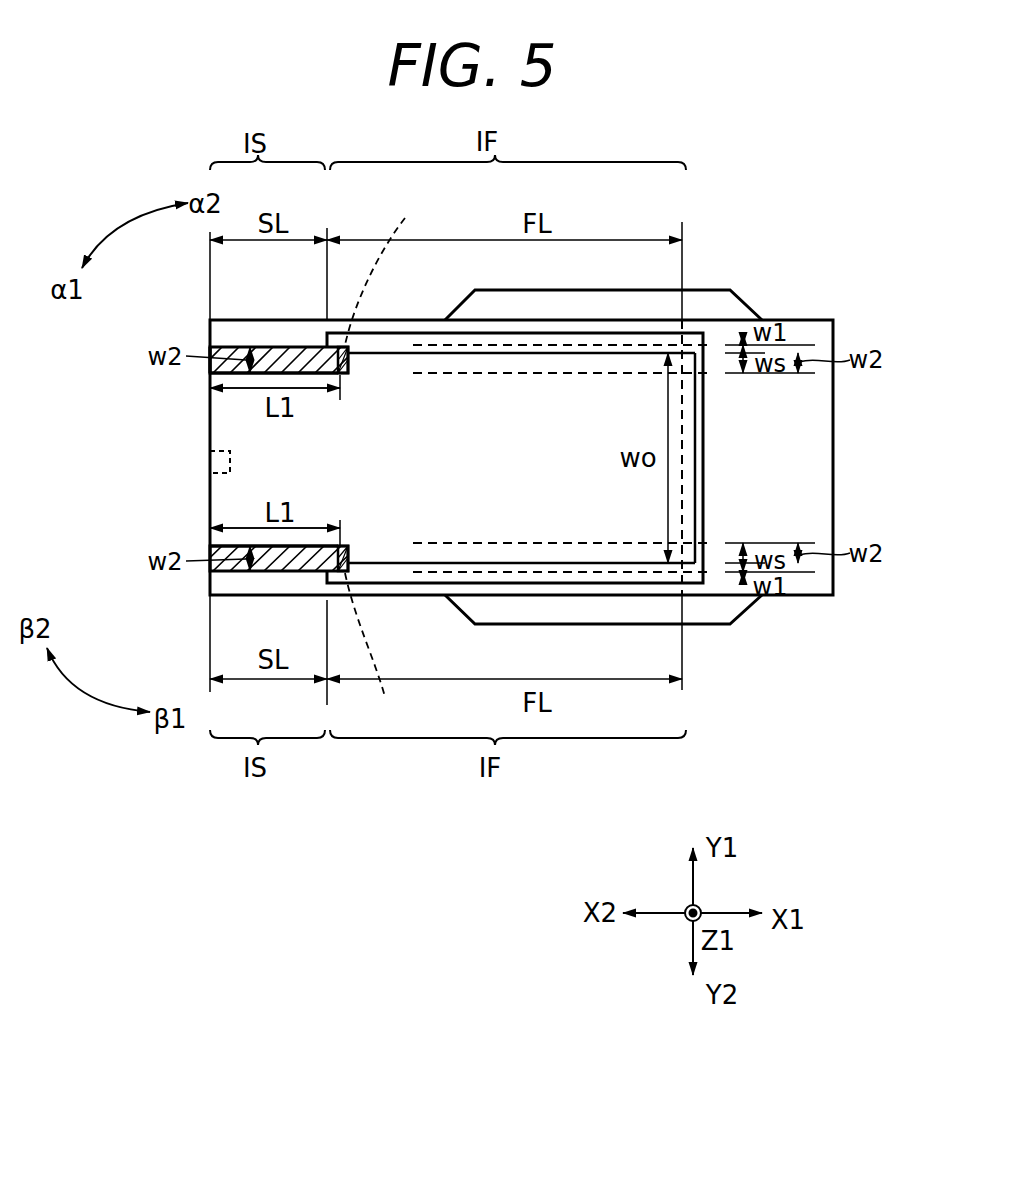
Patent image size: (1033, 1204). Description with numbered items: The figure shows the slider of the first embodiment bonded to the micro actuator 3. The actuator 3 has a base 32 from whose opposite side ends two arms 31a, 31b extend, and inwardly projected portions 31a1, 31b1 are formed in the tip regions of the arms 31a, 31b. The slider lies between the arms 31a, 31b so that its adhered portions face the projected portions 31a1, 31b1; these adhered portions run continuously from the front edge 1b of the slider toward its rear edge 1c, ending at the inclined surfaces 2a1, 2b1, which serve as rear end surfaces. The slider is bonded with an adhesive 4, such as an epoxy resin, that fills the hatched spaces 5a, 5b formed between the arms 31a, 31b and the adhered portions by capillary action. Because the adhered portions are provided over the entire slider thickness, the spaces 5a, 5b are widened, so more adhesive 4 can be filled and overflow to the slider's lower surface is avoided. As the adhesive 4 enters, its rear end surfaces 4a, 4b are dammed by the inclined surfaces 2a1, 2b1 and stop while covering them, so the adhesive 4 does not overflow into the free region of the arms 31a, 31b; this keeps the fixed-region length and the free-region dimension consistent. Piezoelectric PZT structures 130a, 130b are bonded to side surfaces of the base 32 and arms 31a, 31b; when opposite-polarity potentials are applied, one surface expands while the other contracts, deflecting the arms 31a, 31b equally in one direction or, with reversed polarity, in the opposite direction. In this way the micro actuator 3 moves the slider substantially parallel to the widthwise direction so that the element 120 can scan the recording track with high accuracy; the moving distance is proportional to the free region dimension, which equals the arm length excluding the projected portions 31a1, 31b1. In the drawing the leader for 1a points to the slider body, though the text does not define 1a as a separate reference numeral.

The micro actuator 3 is at (782, 297).
The base 32 is at (815, 432).
The piezoelectric (PZT) structure 130a is at (556, 307).
The piezoelectric (PZT) structure 130b is at (576, 610).
The arm 31a is at (398, 318).
The arm 31b is at (406, 597).
The projected portion 31a1 is at (258, 318).
The projected portion 31b1 is at (252, 597).
The adhesive 4 is at (213, 350).
The rear end surface of the adhesive 4a is at (343, 378).
The rear end surface of the adhesive 4b is at (345, 545).
The space 5a is at (214, 370).
The space 5b is at (214, 548).
The radiating conductor 1a is at (226, 415).
The front edge of the slider 1b is at (208, 434).
The rear edge of the slider 1c is at (684, 433).
The element 120 is at (210, 466).
The inclined surface 2a1 is at (391, 266).
The inclined surface 2b1 is at (380, 652).